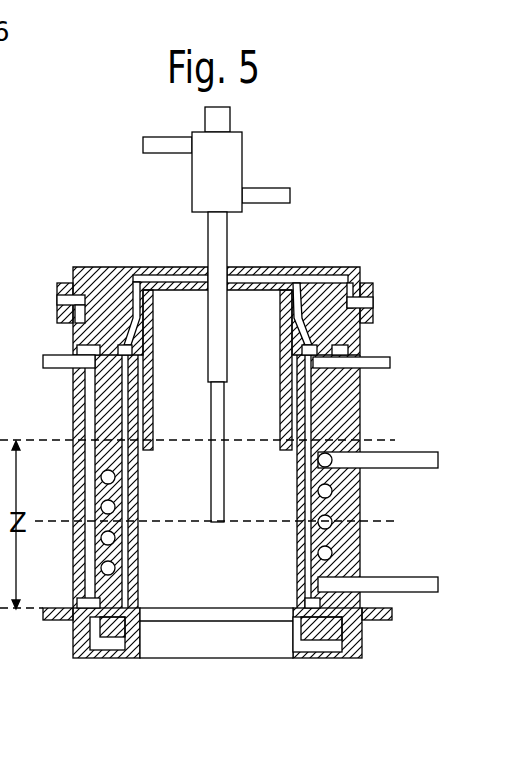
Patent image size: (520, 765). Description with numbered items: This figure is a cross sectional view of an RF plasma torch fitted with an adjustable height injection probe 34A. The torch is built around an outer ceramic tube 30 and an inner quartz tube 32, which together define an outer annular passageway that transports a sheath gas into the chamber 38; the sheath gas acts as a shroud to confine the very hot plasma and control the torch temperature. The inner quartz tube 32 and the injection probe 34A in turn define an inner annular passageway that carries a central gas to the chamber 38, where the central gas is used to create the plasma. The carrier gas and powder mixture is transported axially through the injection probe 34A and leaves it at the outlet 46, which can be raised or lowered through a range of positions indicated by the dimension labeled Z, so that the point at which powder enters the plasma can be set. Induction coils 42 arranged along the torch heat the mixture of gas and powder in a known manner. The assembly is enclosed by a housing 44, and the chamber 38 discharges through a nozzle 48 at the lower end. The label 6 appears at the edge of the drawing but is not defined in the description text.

The lid 6 is at (215, 311).
The outer ceramic tube 30 is at (140, 570).
The inner quartz tube 32 is at (153, 410).
The adjustable height injection probe 34A is at (186, 177).
The chamber 38 is at (230, 591).
The induction coils 42 is at (333, 489).
The housing 44 is at (362, 544).
The outlet 46 is at (216, 522).
The nozzle 48 is at (253, 653).